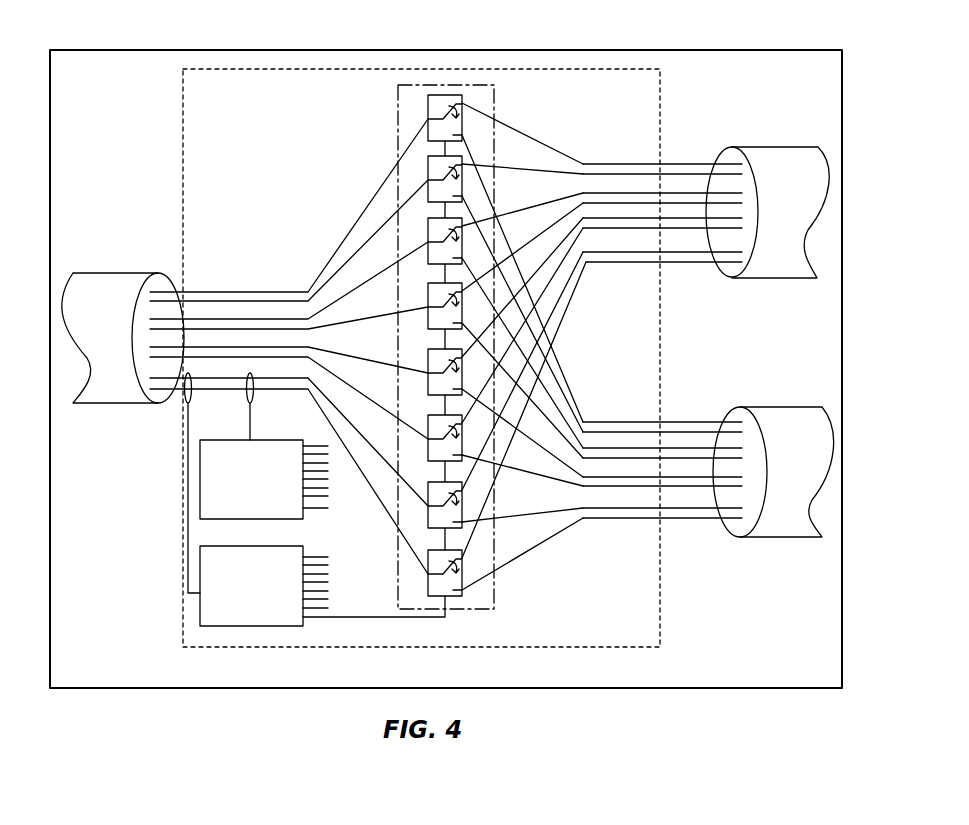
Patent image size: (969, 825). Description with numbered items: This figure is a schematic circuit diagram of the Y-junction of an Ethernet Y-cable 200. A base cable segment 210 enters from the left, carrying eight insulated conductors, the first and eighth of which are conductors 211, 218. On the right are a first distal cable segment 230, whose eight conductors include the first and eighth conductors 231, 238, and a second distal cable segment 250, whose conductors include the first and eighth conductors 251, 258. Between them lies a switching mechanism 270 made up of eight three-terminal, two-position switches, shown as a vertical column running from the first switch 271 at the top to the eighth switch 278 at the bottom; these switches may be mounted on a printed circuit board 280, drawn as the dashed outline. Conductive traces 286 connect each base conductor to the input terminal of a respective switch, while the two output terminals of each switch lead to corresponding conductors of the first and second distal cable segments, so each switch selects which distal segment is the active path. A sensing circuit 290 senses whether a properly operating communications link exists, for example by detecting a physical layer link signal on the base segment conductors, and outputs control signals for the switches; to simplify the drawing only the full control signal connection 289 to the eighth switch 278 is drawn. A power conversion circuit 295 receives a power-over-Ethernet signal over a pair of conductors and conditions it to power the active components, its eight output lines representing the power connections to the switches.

The Ethernet Y-cable 200 is at (820, 98).
The base cable segment 210 is at (117, 328).
The first insulated conductor 211 is at (255, 287).
The eighth insulated conductor 218 is at (300, 418).
The first distal cable segment 230 is at (807, 187).
The first insulated conductor 231 is at (697, 162).
The eighth insulated conductor 238 is at (700, 290).
The second distal cable segment 250 is at (809, 448).
The first insulated conductor 251 is at (720, 418).
The eighth insulated conductor 258 is at (720, 548).
The switching mechanism 270 is at (452, 330).
The first switch 271 is at (458, 95).
The eighth switch 278 is at (455, 596).
The printed circuit board 280 is at (222, 102).
The conductive traces 286 is at (604, 327).
The control signal connection 289 is at (378, 643).
The sensing circuit 290 is at (264, 586).
The power conversion circuit 295 is at (264, 479).